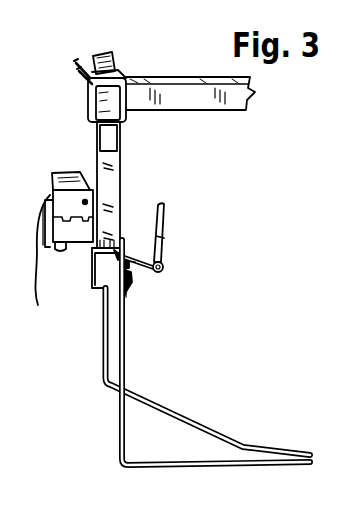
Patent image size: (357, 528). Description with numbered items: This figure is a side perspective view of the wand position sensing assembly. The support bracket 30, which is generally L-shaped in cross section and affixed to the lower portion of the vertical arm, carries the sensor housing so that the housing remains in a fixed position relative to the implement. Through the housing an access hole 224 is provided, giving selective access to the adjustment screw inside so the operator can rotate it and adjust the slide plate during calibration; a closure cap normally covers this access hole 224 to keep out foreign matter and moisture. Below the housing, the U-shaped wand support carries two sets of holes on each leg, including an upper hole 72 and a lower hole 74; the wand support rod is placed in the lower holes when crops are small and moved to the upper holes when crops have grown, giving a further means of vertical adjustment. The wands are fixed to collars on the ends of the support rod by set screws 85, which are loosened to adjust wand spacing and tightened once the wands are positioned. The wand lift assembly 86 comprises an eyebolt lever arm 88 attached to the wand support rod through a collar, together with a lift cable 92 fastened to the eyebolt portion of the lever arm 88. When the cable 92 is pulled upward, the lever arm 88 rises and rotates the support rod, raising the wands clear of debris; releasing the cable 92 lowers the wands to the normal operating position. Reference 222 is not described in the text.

The support bracket 30 is at (97, 223).
The upper hole 72 is at (166, 211).
The lower hole 74 is at (128, 273).
The set screws 85 is at (133, 278).
The wand lift assembly 86 is at (254, 206).
The eyebolt lever arm 88 is at (164, 268).
The lift cable 92 is at (166, 237).
The motor housing 222 is at (64, 249).
The access hole 224 is at (85, 202).